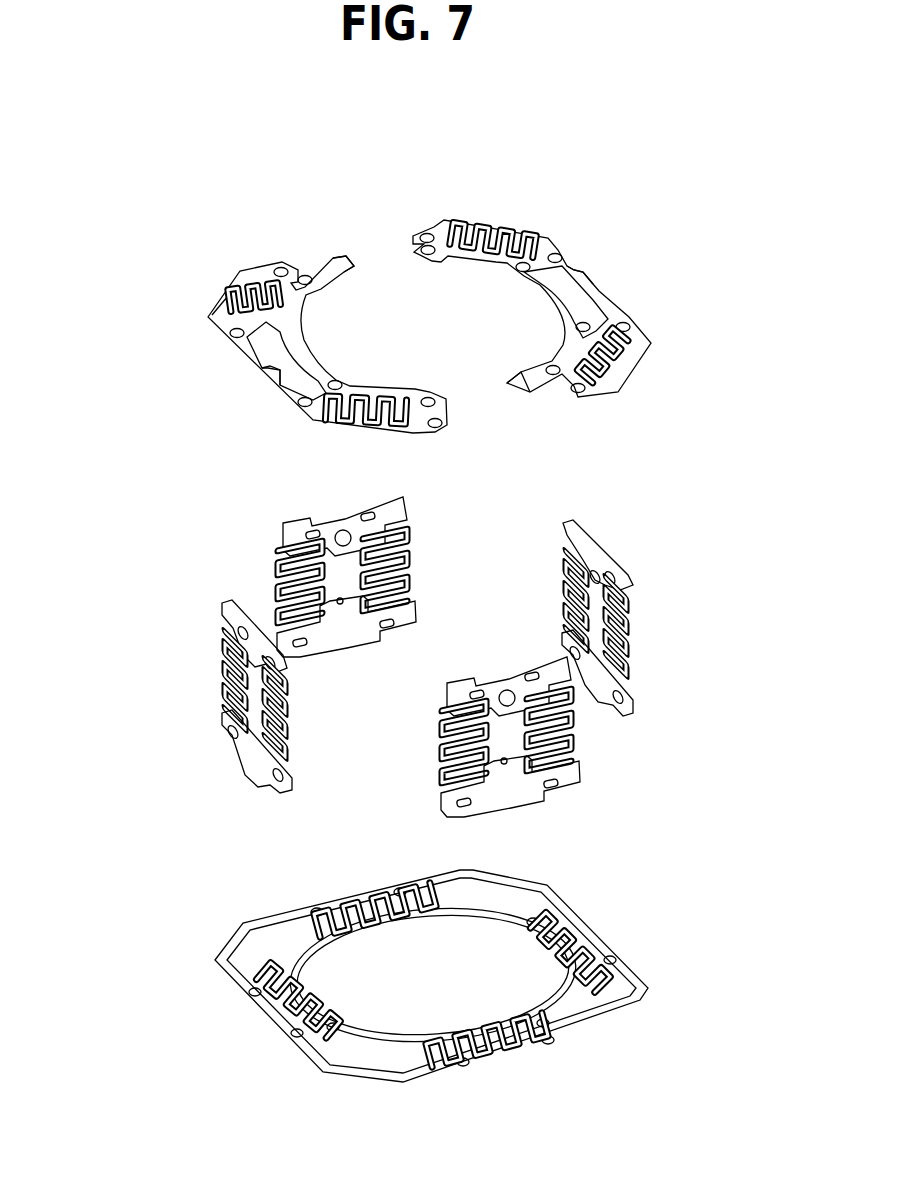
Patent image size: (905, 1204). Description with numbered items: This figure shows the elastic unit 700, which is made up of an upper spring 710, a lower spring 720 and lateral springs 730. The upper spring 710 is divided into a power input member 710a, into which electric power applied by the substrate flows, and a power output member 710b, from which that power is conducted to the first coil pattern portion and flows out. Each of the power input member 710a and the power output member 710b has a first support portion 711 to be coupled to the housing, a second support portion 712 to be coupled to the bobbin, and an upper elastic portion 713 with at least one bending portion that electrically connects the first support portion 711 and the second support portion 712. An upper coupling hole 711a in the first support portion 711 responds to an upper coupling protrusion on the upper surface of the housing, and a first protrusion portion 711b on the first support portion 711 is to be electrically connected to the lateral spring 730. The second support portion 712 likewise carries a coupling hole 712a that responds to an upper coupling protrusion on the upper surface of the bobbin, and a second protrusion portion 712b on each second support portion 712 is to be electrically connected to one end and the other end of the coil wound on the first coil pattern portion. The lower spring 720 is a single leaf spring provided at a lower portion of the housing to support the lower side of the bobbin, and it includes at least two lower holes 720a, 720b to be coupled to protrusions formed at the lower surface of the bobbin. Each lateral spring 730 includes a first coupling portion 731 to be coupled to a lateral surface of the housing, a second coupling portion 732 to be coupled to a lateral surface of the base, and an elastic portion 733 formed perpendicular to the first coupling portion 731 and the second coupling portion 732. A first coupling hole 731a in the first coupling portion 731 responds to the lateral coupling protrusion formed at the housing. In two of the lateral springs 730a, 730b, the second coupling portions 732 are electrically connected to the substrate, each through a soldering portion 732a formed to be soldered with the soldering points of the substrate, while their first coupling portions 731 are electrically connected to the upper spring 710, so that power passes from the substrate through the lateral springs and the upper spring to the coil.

The elastic unit 700 is at (158, 142).
The upper spring 710 is at (193, 278).
The power input member 710a is at (291, 397).
The power output member 710b is at (647, 323).
The first support portion 711 is at (210, 307).
The upper coupling hole 711a is at (276, 267).
The first protrusion portion 711b is at (262, 372).
The second support portion 712 is at (352, 386).
The coupling hole of inner frame 712a is at (306, 275).
The second protrusion portion 712b is at (341, 271).
The upper elastic portion 713 is at (345, 418).
The lower spring 720 is at (236, 914).
The lower hole 720a is at (582, 922).
The lower hole 720b is at (542, 918).
The lateral spring 730 is at (231, 569).
The lateral spring 730a is at (224, 604).
The lateral spring 730b is at (575, 527).
The first coupling portion 731 is at (455, 688).
The first coupling hole 731a is at (507, 690).
The second coupling portion 732 is at (444, 808).
The soldering portion 732a is at (512, 770).
The elastic portion 733 is at (447, 730).